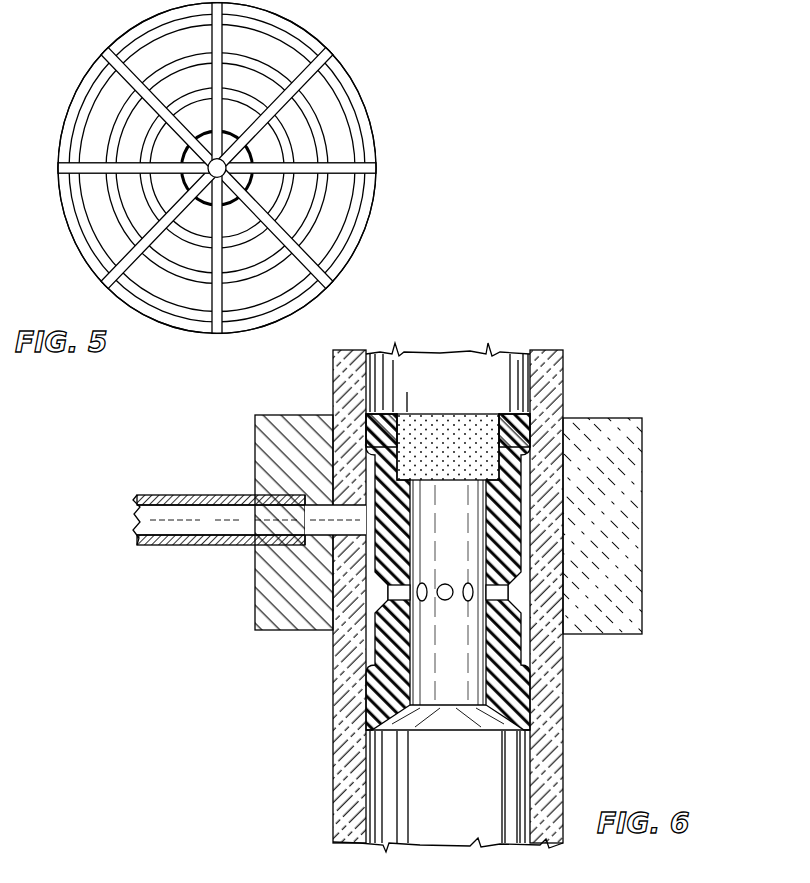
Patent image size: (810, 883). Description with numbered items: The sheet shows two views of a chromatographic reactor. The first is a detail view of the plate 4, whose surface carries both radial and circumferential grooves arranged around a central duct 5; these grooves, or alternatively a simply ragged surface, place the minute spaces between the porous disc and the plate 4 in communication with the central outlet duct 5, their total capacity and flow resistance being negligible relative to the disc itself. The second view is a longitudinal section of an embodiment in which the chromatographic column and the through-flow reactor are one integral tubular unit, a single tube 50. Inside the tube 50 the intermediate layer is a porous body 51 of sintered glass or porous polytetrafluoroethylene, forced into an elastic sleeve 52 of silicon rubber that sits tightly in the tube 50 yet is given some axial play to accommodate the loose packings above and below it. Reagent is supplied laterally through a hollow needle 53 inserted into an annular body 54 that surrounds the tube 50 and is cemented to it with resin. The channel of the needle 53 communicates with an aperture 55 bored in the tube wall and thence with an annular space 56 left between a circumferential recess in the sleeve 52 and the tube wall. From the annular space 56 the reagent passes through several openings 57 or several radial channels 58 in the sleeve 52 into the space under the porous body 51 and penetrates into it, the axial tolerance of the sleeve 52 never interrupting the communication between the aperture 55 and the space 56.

In FIG. 5, the plate 4 is at (333, 130).
In FIG. 5, the central duct 5 is at (219, 165).
In FIG. 6, the tube 50 is at (565, 356).
In FIG. 6, the porous body 51 is at (467, 430).
In FIG. 6, the sleeve 52 is at (527, 656).
In FIG. 6, the hollow needle 53 is at (175, 525).
In FIG. 6, the annular body 54 is at (622, 497).
In FIG. 6, the aperture 55 is at (353, 527).
In FIG. 6, the annular space 56 is at (370, 628).
In FIG. 6, the openings 57 is at (445, 600).
In FIG. 6, the radial channels 58 is at (392, 413).